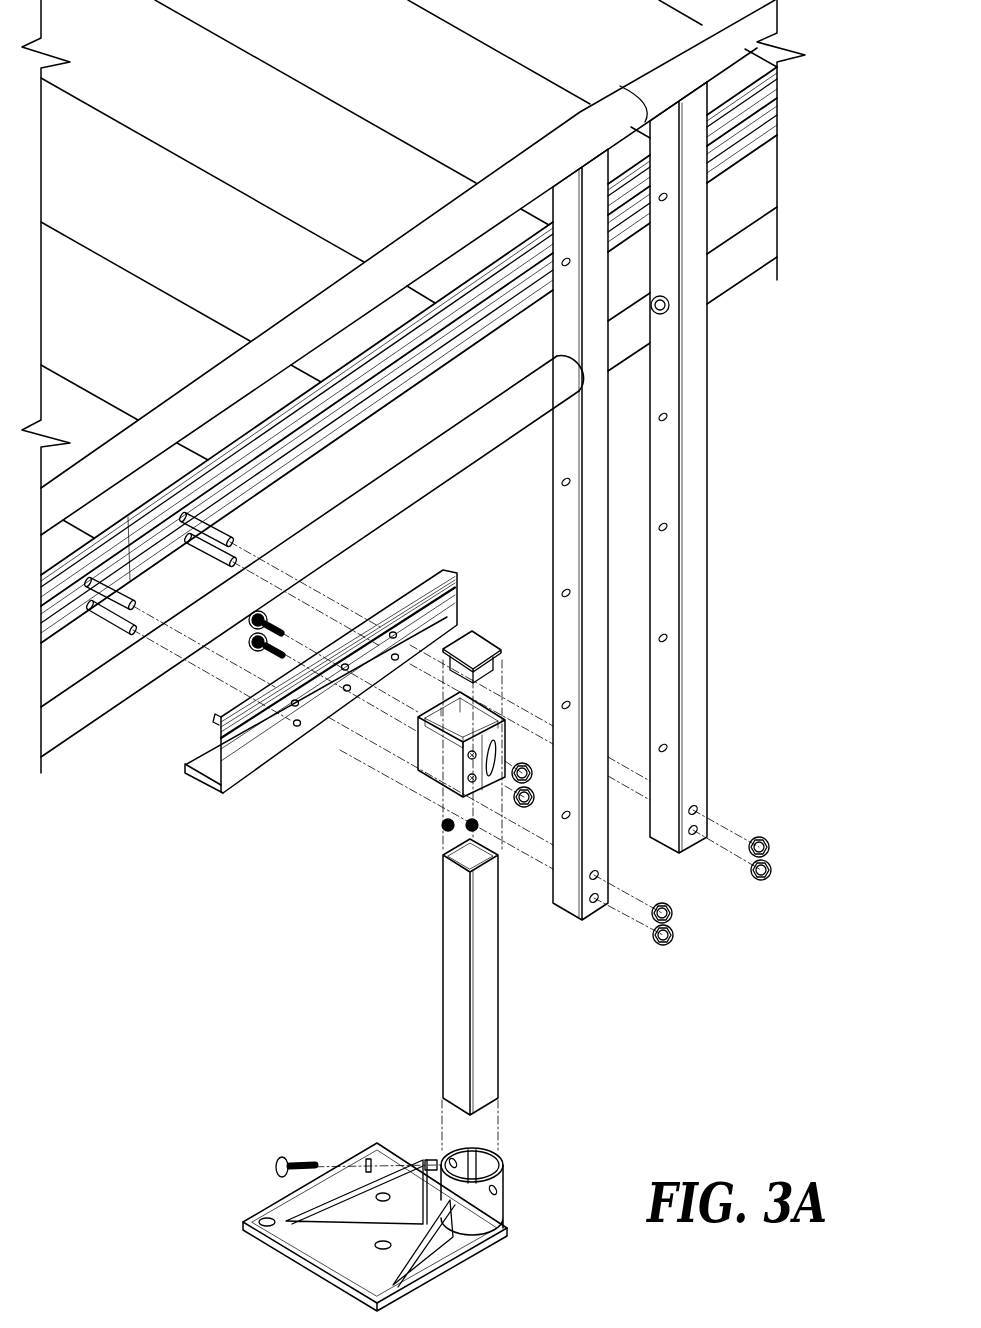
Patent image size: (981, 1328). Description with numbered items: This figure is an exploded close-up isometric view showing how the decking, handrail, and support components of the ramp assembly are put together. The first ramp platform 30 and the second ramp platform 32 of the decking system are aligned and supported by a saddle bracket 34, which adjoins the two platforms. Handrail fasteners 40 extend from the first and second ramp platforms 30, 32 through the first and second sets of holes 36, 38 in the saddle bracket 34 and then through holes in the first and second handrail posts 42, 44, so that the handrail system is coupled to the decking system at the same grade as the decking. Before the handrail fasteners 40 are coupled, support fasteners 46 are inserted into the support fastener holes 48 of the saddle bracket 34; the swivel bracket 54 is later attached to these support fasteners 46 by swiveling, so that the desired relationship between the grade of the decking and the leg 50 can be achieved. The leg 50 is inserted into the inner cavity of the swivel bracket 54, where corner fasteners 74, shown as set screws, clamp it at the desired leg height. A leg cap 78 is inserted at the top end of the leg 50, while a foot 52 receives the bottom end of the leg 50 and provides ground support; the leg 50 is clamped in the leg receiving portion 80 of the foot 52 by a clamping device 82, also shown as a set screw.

The first ramp platform 30 is at (68, 628).
The second ramp platform 32 is at (408, 393).
The saddle bracket 34 is at (321, 675).
The first set of holes 36 is at (299, 728).
The second set of holes 38 is at (411, 640).
The handrail fasteners 40 is at (217, 556).
The first handrail post 42 is at (557, 517).
The second handrail post 44 is at (707, 478).
The support fasteners 46 is at (255, 638).
The support fastener holes 48 is at (348, 686).
The leg 50 is at (448, 1000).
The foot 52 is at (320, 1253).
The swivel bracket 54 is at (422, 747).
The corner fasteners 74 is at (442, 828).
The leg cap 78 is at (481, 642).
The leg receiving portion 80 is at (492, 1152).
The clamping device 82 is at (278, 1160).